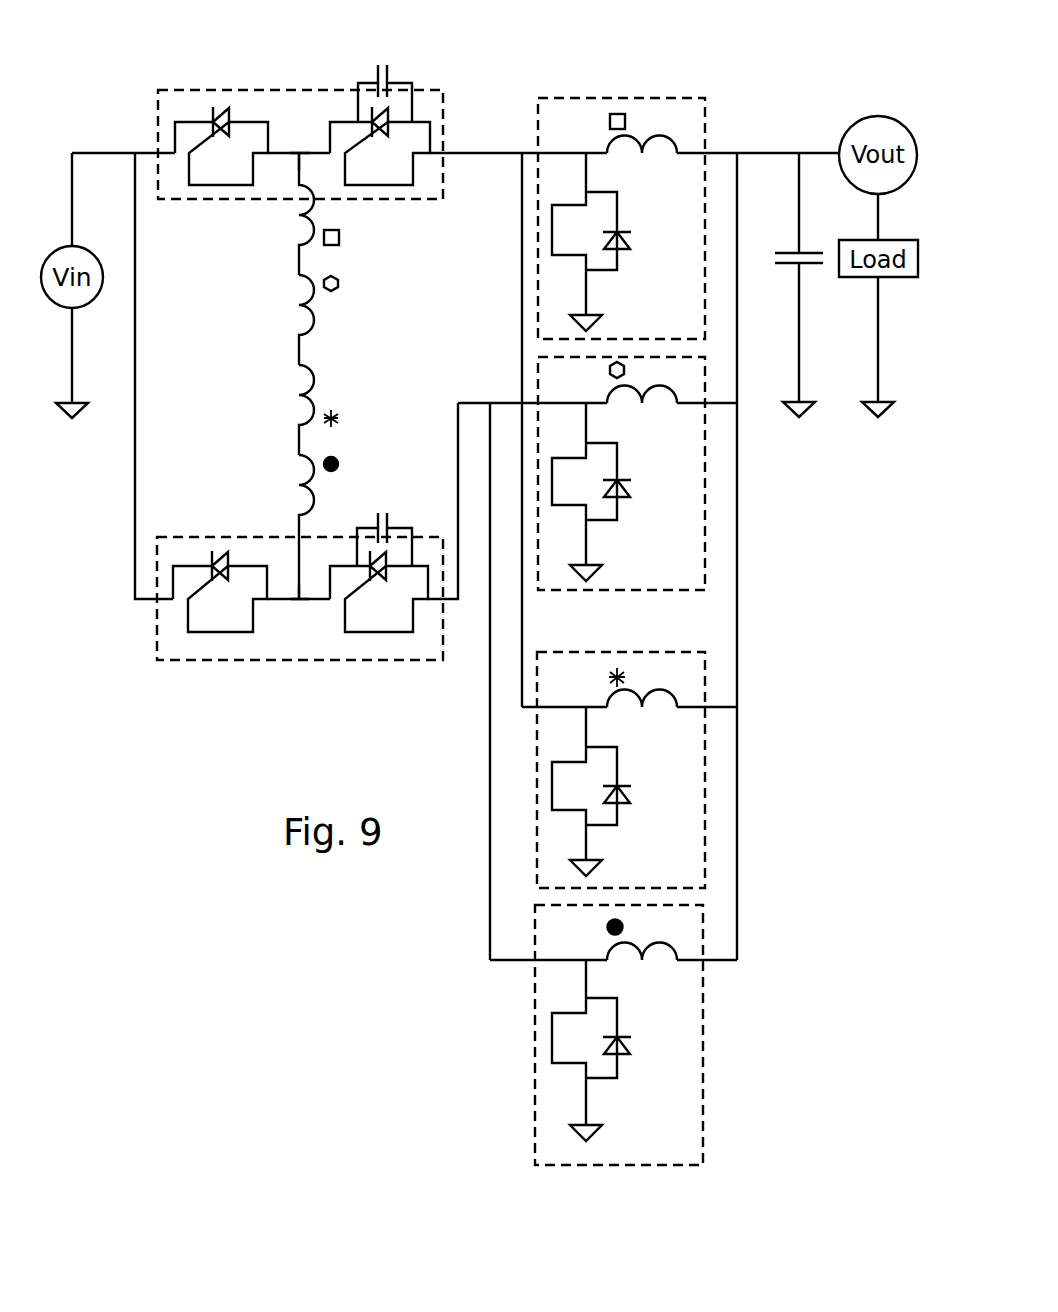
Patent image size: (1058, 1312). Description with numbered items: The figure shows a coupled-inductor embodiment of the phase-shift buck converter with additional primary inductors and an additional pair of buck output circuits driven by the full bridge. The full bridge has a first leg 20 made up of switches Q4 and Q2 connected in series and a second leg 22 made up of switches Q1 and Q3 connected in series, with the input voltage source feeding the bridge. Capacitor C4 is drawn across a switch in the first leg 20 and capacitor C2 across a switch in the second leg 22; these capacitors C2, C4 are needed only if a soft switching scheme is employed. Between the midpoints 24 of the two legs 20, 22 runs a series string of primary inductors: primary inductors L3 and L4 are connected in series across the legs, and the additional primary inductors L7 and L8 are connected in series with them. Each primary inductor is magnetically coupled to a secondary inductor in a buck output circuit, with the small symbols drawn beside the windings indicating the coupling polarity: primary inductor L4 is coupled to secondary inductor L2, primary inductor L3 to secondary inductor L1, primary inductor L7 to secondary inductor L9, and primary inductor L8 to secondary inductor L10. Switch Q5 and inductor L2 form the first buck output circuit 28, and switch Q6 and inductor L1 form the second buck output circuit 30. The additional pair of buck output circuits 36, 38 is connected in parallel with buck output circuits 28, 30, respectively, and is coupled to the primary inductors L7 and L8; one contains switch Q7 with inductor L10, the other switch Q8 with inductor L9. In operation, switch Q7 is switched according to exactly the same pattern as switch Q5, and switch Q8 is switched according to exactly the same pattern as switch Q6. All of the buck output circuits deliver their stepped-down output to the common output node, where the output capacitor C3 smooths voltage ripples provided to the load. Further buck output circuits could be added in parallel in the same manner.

The first leg 20 is at (300, 110).
The second leg 22 is at (300, 602).
The midpoints 24 is at (300, 153).
The first buck output circuit 28 is at (621, 194).
The second buck output circuit 30 is at (671, 473).
The additional buck output circuit 36 is at (670, 770).
The additional buck output circuit 38 is at (667, 1035).
The switch Q1 is at (220, 591).
The switch Q2 is at (380, 146).
The switch Q3 is at (379, 591).
The switch Q4 is at (221, 146).
The switch Q5 is at (591, 242).
The switch Q6 is at (591, 492).
The switch Q7 is at (591, 791).
The switch Q8 is at (591, 1050).
The secondary inductor L1 is at (640, 407).
The secondary inductor L2 is at (641, 157).
The primary inductor L3 is at (306, 305).
The primary inductor L4 is at (305, 212).
The additional primary inductor L7 is at (306, 485).
The additional primary inductor L8 is at (306, 396).
The secondary inductor L9 is at (639, 964).
The secondary inductor L10 is at (640, 711).
The capacitor C2 is at (388, 519).
The output capacitor C3 is at (780, 265).
The capacitor C4 is at (388, 74).